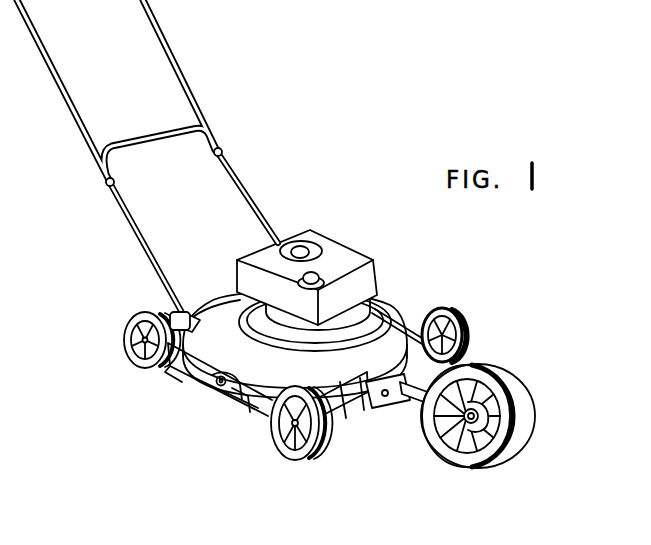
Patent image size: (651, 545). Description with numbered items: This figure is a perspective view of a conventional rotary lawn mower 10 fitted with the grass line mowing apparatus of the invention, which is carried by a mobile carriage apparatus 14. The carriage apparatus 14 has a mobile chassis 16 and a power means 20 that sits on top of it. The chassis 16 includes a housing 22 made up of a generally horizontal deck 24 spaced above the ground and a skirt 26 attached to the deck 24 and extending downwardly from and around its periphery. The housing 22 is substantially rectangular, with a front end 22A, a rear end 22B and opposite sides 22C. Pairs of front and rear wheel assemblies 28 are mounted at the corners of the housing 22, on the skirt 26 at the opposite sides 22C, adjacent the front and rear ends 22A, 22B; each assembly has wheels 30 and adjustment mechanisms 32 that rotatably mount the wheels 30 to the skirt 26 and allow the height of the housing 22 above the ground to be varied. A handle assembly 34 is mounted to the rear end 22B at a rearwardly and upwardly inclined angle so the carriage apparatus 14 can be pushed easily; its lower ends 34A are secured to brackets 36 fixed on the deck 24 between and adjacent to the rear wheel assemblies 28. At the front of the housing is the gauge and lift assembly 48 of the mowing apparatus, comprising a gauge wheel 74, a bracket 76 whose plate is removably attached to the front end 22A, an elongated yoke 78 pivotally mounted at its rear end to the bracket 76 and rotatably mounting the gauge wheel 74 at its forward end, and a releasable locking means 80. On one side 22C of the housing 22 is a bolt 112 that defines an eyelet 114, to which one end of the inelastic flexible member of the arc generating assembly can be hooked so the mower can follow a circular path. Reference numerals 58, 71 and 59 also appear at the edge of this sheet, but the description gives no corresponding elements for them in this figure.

The rotary lawn mower 10 is at (426, 106).
The mobile carriage apparatus 14 is at (390, 293).
The mobile chassis 16 is at (231, 404).
The power means 20 is at (349, 244).
The housing 22 is at (169, 377).
The front end 22A is at (481, 344).
The rear end 22B is at (237, 312).
The sides 22C is at (181, 379).
The deck 24 is at (234, 312).
The skirt 26 is at (257, 372).
The wheel assemblies 28 is at (130, 309).
The wheels 30 is at (125, 338).
The adjustment mechanisms 32 is at (165, 314).
The handle assembly 34 is at (197, 78).
The lower ends 34A is at (174, 283).
The brackets 36 is at (199, 316).
The gauge and lift assembly 48 is at (413, 414).
The gauge wheel 74 is at (510, 462).
The bracket 76 is at (405, 363).
The elongated yoke 78 is at (462, 457).
The releasable locking means 80 is at (394, 395).
The bolt 112 is at (239, 398).
The eyelet 114 is at (215, 385).
The component of adjacent figure 58 is at (27, 544).
The component of adjacent figure 71 is at (45, 544).
The component of adjacent figure 59 is at (93, 544).